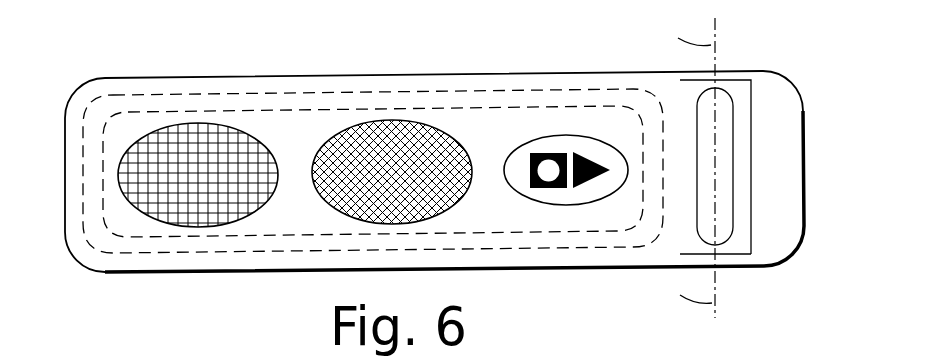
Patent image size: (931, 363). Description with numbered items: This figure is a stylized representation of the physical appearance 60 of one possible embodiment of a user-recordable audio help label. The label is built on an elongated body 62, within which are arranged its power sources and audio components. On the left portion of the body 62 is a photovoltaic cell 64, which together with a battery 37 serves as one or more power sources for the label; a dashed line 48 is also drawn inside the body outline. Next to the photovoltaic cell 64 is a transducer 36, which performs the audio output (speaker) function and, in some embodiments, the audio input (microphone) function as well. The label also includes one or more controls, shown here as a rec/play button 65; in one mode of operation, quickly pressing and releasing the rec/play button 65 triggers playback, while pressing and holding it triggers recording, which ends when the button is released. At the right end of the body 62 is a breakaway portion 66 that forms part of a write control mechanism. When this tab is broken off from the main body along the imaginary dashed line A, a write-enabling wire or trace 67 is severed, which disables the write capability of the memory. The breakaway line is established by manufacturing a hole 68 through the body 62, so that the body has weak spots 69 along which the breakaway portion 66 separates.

The physical appearance 60 is at (532, 293).
The body 62 is at (452, 73).
The photovoltaic cell 64 is at (200, 122).
The outer boundary line 48 is at (255, 95).
The battery 37 is at (300, 113).
The transducer 36 is at (398, 119).
The rec/play button 65 is at (565, 135).
The breakaway portion 66 is at (785, 152).
The write-enabling wire or trace 67 is at (722, 257).
The hole 68 is at (723, 123).
The weak spots 69 is at (722, 73).